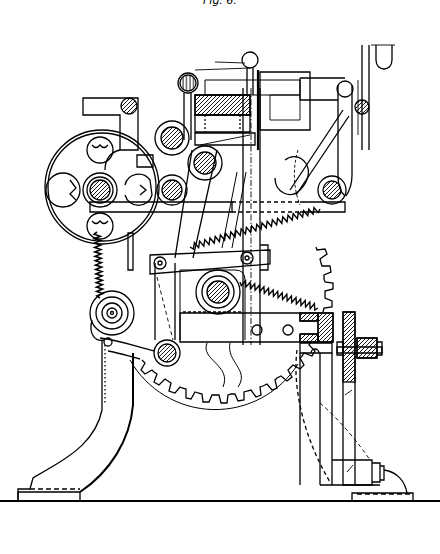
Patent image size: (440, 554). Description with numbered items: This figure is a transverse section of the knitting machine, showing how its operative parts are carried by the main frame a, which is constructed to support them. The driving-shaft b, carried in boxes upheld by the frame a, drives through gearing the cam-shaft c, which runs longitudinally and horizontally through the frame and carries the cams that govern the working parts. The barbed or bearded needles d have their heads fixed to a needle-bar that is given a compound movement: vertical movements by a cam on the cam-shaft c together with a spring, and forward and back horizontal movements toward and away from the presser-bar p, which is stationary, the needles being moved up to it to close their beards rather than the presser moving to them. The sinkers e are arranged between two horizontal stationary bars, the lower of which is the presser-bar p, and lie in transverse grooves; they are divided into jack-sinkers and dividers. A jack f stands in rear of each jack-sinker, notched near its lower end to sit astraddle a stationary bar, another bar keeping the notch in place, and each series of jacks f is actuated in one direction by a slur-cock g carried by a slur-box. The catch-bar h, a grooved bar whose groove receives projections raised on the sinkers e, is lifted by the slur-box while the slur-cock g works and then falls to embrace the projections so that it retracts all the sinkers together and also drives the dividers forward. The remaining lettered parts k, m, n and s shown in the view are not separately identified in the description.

The main frame a is at (220, 399).
The driving-shaft b is at (135, 311).
The cam-shaft c is at (114, 134).
The barbed or bearded needles d is at (256, 327).
The sinkers e is at (364, 344).
The jack f is at (102, 200).
The slur-cock g is at (231, 328).
The catch-bar h is at (217, 213).
The rollers k is at (262, 196).
The center post m is at (229, 216).
The feed mechanism n is at (252, 106).
The presser-bar p is at (342, 120).
The spring s is at (207, 259).